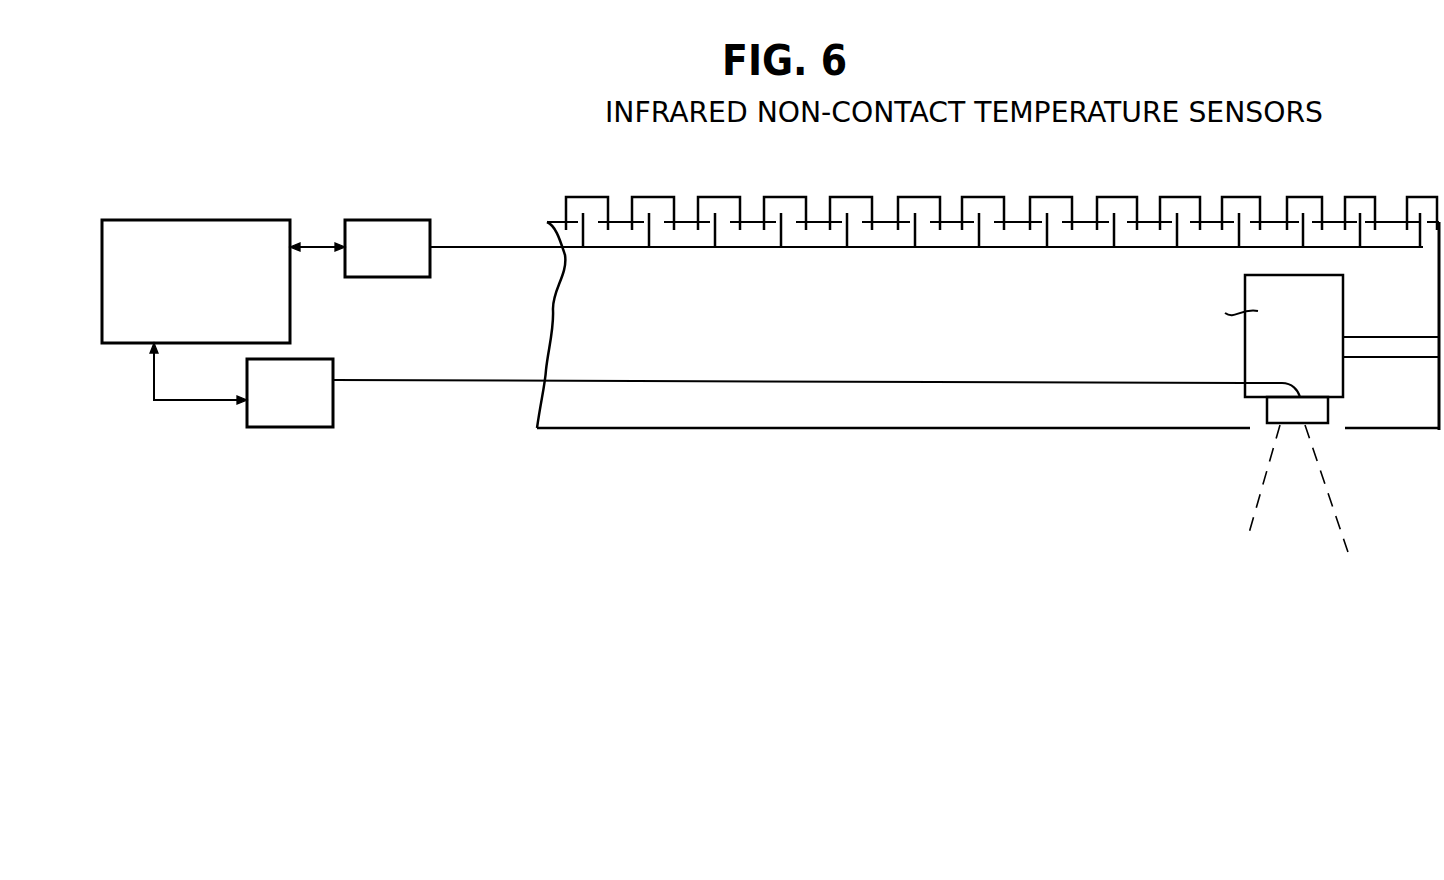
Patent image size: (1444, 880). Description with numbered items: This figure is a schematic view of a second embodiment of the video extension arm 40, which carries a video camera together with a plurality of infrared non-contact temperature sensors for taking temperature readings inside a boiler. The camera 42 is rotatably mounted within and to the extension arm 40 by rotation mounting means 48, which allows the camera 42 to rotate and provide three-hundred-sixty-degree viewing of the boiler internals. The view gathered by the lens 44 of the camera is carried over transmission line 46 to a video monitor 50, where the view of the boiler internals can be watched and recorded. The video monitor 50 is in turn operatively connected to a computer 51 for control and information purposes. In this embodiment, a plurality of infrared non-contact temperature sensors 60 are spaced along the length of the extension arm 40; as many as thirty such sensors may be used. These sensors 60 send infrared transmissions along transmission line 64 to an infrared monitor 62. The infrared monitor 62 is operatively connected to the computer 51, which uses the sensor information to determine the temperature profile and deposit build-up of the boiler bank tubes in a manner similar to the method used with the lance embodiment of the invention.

The extension arm 40 is at (823, 430).
The camera 42 is at (1325, 325).
The lens 44 is at (1283, 410).
The transmission line 46 is at (457, 384).
The rotation mounting means 48 is at (1411, 345).
The video monitor 50 is at (305, 408).
The computer 51 is at (234, 226).
The infrared non-contact temperature sensors 60 is at (1175, 200).
The infrared monitor 62 is at (401, 230).
The transmission line 64 is at (902, 248).